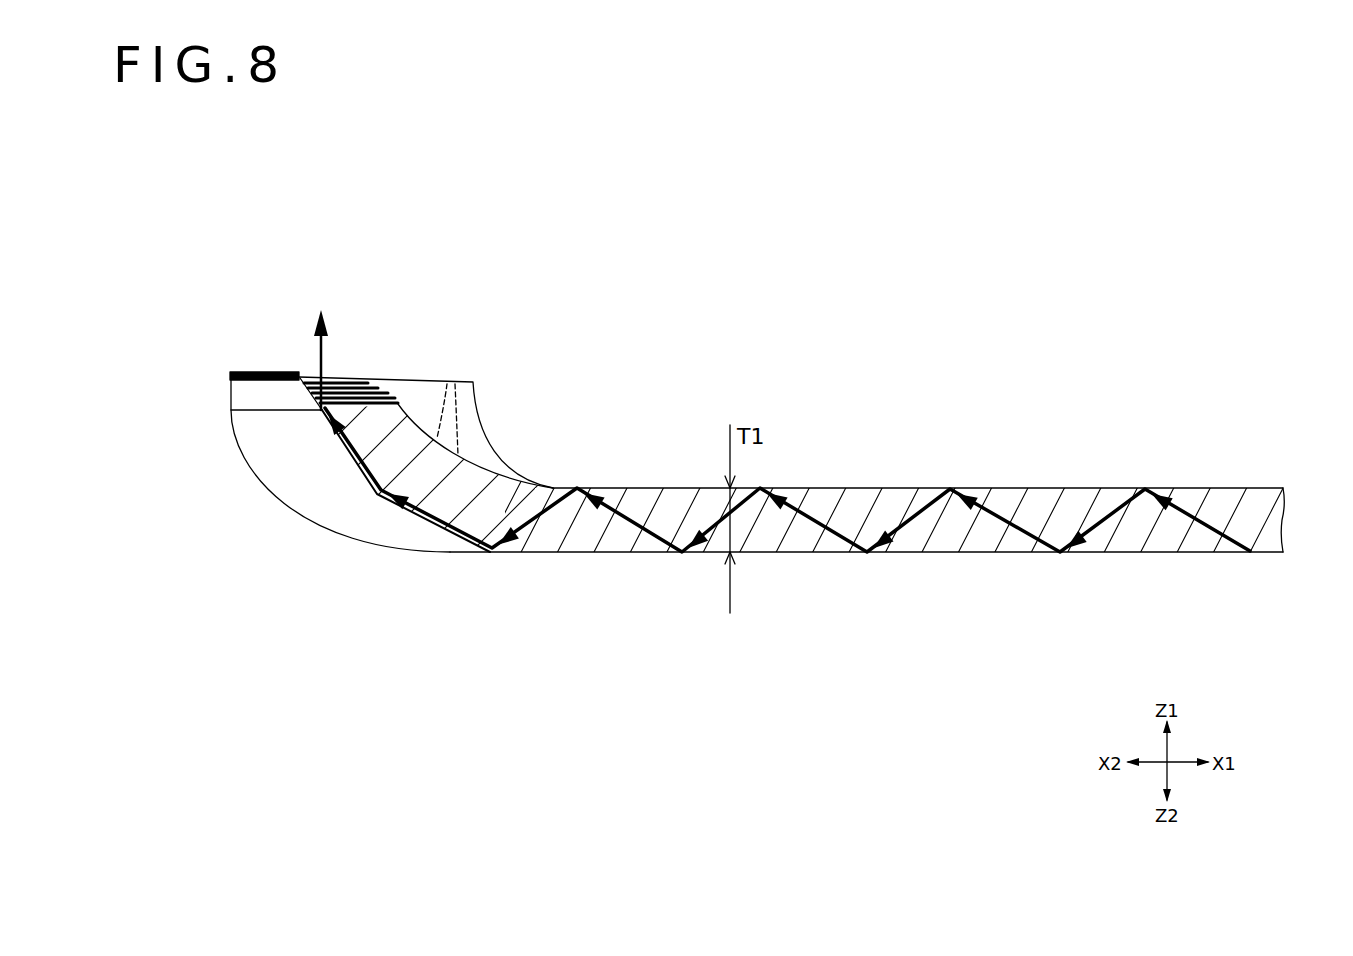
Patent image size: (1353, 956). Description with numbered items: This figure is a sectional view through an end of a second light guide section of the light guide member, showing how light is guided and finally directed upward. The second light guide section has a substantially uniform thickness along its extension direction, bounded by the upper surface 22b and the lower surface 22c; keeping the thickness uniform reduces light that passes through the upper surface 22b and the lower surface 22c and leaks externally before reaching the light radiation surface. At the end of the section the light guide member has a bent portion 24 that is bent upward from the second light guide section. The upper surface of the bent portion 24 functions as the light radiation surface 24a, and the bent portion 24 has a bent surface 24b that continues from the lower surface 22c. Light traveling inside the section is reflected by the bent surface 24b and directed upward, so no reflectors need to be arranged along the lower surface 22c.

The bent portion 24 is at (443, 470).
The light radiation surface 24a is at (350, 382).
The bent surface 24b is at (372, 491).
The upper surface 22b is at (890, 487).
The lower surface 22c is at (950, 553).